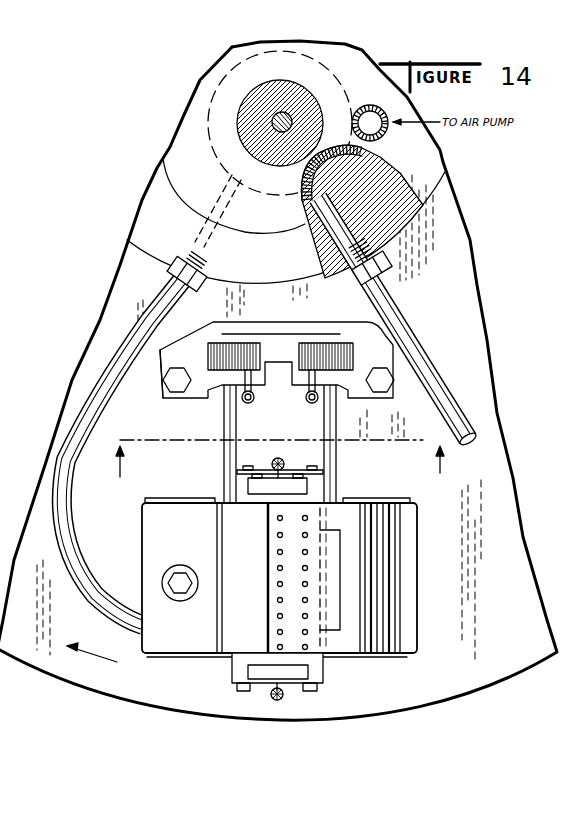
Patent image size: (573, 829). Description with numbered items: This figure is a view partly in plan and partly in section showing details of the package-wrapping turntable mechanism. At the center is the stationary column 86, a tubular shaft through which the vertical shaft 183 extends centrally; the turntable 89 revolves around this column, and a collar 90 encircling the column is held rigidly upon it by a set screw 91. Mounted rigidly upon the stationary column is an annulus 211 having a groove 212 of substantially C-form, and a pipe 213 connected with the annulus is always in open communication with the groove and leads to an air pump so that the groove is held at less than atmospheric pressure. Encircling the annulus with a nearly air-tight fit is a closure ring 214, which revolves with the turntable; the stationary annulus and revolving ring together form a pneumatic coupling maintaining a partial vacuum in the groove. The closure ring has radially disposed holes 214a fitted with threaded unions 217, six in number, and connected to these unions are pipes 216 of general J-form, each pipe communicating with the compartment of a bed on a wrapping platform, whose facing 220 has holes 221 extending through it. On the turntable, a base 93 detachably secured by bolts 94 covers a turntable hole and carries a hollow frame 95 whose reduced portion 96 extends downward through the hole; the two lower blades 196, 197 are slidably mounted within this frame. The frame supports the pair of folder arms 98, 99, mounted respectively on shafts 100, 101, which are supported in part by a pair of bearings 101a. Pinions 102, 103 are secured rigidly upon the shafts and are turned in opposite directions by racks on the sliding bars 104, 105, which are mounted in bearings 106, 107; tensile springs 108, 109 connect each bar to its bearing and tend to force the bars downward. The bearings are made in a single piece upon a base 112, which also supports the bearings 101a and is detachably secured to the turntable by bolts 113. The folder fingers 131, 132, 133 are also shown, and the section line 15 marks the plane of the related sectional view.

The section line 15- 15 is at (280, 449).
The stationary column 86 is at (240, 120).
The turntable 89 is at (508, 513).
The collar 90 is at (6, 119).
The set screw 91 is at (5, 99).
The base 93 is at (414, 586).
The bolts 94 is at (178, 572).
The hollow frame 95 is at (5, 233).
The reduced portion 96 is at (322, 472).
The folder arm 98 is at (279, 578).
The folder arm 99 is at (387, 540).
The shaft 100 is at (225, 463).
The shaft 101 is at (336, 425).
The bearings 101a is at (220, 333).
The pinion 102 is at (210, 352).
The pinion 103 is at (353, 352).
The sliding bar 104 is at (258, 345).
The sliding bar 105 is at (303, 350).
The bearing 106 is at (251, 401).
The bearing 107 is at (293, 388).
The tensile spring 108 is at (250, 408).
The tensile spring 109 is at (312, 403).
The base 112 is at (224, 333).
The bolts 113 is at (182, 392).
The folder finger 131 is at (155, 503).
The folder finger 132 is at (371, 669).
The folder finger 133 is at (399, 503).
The vertical shaft 183 is at (272, 120).
The lower blade 196 is at (310, 498).
The lower blade 197 is at (303, 659).
The annulus 211 is at (190, 149).
The groove 212 is at (367, 168).
The pipe 213 is at (392, 117).
The closure ring 214 is at (410, 204).
The radially disposed holes 214a is at (350, 228).
The pipe 216 is at (433, 373).
The threaded union 217 is at (392, 262).
The facing 220 is at (293, 583).
The holes 221 is at (303, 546).